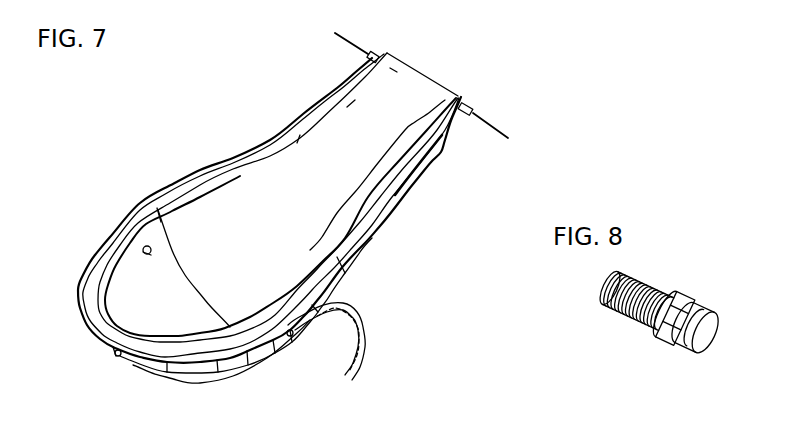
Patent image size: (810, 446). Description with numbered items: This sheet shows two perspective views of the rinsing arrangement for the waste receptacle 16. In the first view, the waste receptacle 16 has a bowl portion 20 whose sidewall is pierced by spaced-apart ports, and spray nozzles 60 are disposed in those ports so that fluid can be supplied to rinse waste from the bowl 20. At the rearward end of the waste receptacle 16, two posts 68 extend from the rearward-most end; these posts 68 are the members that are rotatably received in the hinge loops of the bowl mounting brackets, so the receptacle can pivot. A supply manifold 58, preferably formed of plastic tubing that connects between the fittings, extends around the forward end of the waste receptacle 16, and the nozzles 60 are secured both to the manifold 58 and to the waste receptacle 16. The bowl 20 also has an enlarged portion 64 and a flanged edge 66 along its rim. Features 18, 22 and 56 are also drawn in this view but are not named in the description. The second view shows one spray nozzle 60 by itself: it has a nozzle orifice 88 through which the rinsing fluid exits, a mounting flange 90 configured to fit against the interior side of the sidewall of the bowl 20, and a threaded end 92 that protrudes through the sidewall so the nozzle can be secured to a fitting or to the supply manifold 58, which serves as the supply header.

In FIG. 7, the waste receptacle 16 is at (220, 167).
In FIG. 7, the pivot axis 18 is at (490, 125).
In FIG. 7, the bowl portion 20 is at (122, 270).
In FIG. 7, the top bar 22 is at (415, 90).
In FIG. 7, the strap loop 56 is at (365, 332).
In FIG. 7, the supply manifold 58 is at (183, 370).
In FIG. 7, the spray nozzle 60 is at (145, 247).
In FIG. 8, the spray nozzle 60 is at (666, 297).
In FIG. 7, the enlarged portion 64 is at (313, 283).
In FIG. 7, the flanged edge 66 is at (80, 300).
In FIG. 7, the post 68 is at (371, 51).
In FIG. 8, the nozzle orifice 88 is at (673, 282).
In FIG. 8, the mounting flange 90 is at (671, 316).
In FIG. 8, the threaded end 92 is at (635, 300).